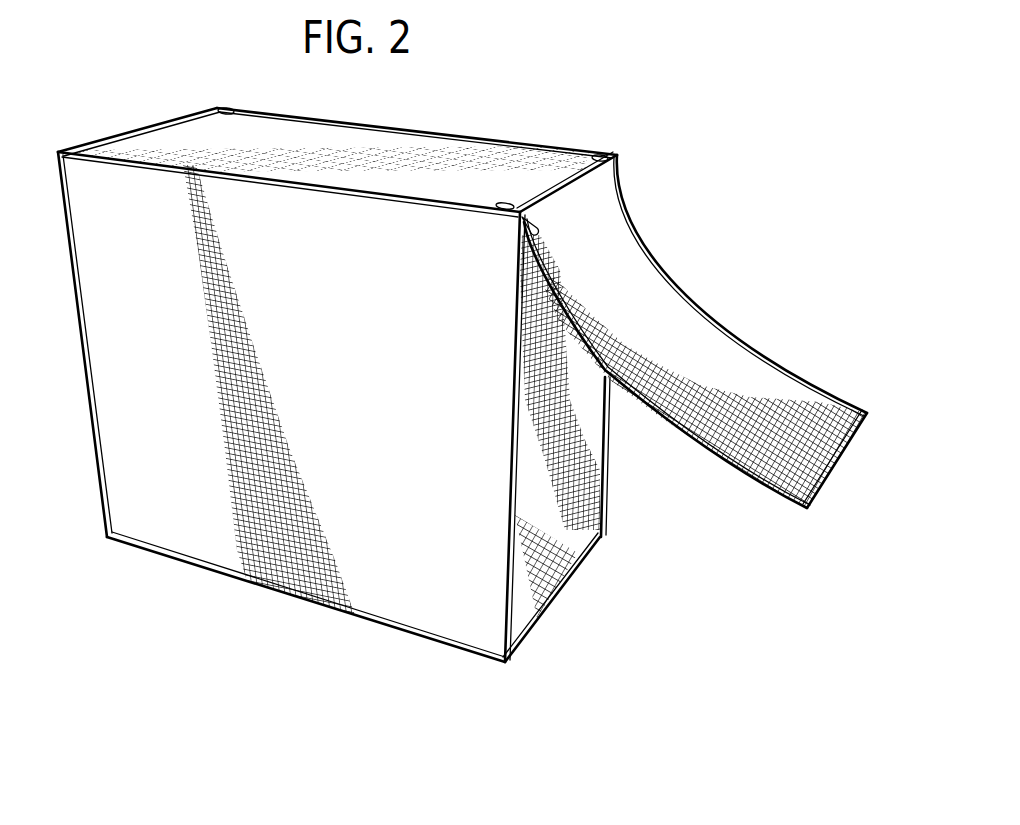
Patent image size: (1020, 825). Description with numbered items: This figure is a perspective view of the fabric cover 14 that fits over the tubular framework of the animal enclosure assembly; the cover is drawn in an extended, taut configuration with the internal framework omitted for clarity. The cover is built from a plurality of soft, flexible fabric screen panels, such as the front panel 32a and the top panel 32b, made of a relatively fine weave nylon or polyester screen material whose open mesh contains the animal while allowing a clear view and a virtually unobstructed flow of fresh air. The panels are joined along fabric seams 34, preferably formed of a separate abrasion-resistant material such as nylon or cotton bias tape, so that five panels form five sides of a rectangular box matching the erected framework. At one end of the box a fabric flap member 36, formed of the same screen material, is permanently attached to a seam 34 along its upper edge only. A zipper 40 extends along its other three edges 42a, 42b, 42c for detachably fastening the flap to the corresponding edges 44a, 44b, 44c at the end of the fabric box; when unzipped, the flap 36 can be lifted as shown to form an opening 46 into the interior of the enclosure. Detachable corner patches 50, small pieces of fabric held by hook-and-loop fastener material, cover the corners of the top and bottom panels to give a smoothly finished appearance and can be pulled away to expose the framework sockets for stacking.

The fabric cover 14 is at (127, 106).
The fabric panel 32a is at (333, 354).
The fabric panel 32b is at (323, 138).
The fabric seam 34 is at (442, 134).
The fabric flap member 36 is at (657, 288).
The zipper 40 is at (527, 228).
The flap edge 42a is at (740, 478).
The flap edge 42b is at (833, 480).
The flap edge 42c is at (740, 332).
The box edge 44a is at (518, 479).
The box edge 44b is at (560, 601).
The box edge 44c is at (605, 455).
The opening 46 is at (620, 527).
The corner patch 50 is at (503, 202).